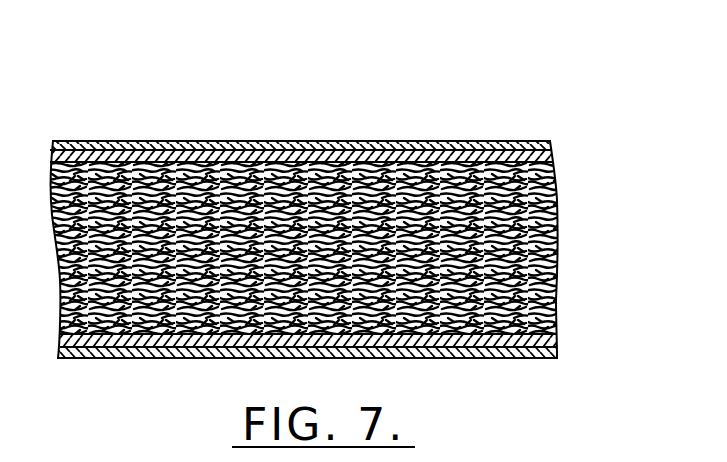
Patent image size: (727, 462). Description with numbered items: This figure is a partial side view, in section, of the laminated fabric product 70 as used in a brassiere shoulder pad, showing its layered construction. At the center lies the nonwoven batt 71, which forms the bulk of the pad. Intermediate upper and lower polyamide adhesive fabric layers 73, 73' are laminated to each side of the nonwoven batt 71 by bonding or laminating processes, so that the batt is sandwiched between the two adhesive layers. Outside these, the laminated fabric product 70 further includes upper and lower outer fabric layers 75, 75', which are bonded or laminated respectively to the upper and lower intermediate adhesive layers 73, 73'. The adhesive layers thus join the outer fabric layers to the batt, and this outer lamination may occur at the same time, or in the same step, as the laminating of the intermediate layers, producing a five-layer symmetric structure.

The laminated fabric product 70 is at (262, 96).
The nonwoven batt 71 is at (558, 223).
The upper intermediate polyamide adhesive fabric layer 73 is at (335, 144).
The lower intermediate polyamide adhesive fabric layer 73' is at (340, 317).
The upper outer fabric layer 75 is at (325, 121).
The lower outer fabric layer 75' is at (342, 346).